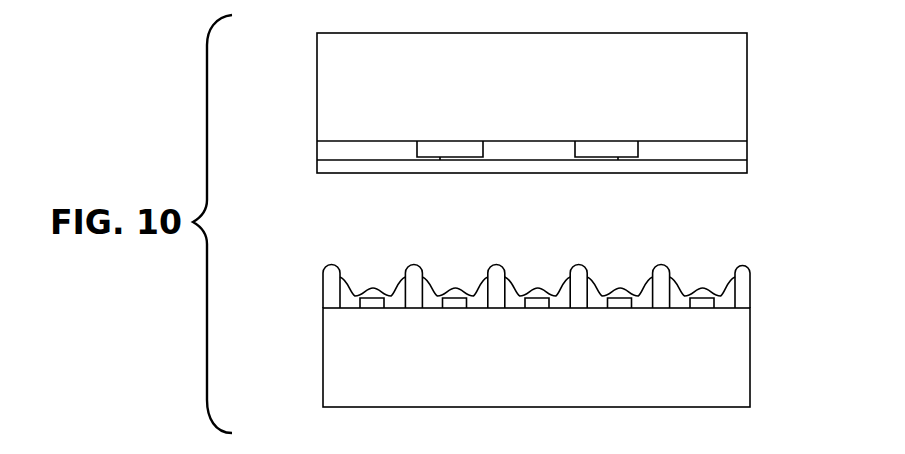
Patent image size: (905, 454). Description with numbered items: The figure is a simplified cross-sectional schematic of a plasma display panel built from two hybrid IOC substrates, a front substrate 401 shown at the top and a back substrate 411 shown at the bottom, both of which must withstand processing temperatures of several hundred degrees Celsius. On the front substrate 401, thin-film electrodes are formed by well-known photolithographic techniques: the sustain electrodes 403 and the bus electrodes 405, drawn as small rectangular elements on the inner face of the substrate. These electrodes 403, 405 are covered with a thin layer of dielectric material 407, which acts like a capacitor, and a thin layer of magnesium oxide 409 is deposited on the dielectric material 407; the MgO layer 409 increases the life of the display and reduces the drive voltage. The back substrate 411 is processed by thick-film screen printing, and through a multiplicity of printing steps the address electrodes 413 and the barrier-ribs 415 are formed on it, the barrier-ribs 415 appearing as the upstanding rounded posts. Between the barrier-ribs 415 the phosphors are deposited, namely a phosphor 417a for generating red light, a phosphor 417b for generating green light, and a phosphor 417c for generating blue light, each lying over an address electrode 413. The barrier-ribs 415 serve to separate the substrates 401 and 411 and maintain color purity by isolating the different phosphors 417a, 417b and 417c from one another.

The front substrate 401 is at (317, 86).
The sustain electrodes 403 is at (417, 147).
The bus electrodes 405 is at (640, 158).
The dielectric material 407 is at (747, 151).
The magnesium oxide layer 409 is at (747, 167).
The back substrate 411 is at (323, 358).
The address electrodes 413 is at (372, 299).
The barrier-ribs 415 is at (330, 290).
The phosphor for generating red light 417a is at (563, 302).
The phosphor for generating green light 417b is at (595, 302).
The phosphor for generating blue light 417c is at (680, 302).